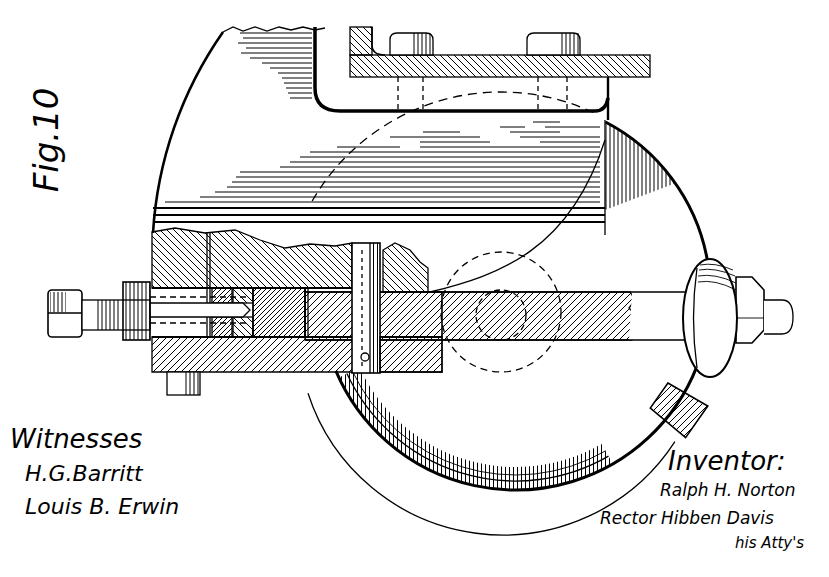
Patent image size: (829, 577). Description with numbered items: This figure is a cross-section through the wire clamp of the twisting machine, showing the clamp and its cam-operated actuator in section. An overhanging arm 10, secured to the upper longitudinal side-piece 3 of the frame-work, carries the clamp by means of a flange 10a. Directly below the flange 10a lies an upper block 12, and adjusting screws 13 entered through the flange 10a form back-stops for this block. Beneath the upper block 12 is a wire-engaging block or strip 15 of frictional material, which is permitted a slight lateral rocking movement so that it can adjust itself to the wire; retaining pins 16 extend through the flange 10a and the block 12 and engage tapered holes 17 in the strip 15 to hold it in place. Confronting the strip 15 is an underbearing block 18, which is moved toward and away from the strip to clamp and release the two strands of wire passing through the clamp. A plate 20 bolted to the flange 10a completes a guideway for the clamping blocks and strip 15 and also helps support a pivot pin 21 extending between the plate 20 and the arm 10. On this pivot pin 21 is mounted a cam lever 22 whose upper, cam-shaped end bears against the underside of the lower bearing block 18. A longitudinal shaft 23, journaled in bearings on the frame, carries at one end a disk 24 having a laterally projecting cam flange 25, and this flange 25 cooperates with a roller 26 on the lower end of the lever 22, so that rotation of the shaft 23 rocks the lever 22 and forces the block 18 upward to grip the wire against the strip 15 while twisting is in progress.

The upper longitudinal side-piece 3 is at (471, 55).
The overhanging arm 10 is at (202, 93).
The flange 10a is at (152, 287).
The upper block 12 is at (175, 317).
The adjusting screws 13 is at (93, 300).
The wire-engaging block or strip 15 is at (248, 288).
The retaining pins 16 is at (152, 362).
The tapered holes 17 is at (240, 372).
The underbearing block 18 is at (300, 258).
The plate 20 is at (325, 385).
The pivot pin 21 is at (309, 391).
The cam lever 22 is at (573, 325).
The longitudinal shaft 23 is at (498, 286).
The disk 24 is at (678, 209).
The cam flange 25 is at (572, 484).
The roller 26 is at (755, 283).